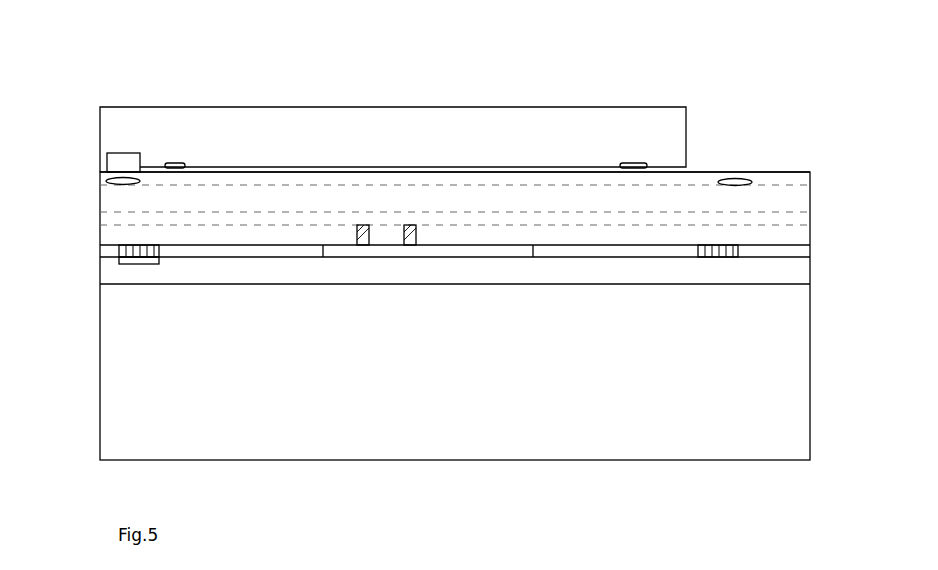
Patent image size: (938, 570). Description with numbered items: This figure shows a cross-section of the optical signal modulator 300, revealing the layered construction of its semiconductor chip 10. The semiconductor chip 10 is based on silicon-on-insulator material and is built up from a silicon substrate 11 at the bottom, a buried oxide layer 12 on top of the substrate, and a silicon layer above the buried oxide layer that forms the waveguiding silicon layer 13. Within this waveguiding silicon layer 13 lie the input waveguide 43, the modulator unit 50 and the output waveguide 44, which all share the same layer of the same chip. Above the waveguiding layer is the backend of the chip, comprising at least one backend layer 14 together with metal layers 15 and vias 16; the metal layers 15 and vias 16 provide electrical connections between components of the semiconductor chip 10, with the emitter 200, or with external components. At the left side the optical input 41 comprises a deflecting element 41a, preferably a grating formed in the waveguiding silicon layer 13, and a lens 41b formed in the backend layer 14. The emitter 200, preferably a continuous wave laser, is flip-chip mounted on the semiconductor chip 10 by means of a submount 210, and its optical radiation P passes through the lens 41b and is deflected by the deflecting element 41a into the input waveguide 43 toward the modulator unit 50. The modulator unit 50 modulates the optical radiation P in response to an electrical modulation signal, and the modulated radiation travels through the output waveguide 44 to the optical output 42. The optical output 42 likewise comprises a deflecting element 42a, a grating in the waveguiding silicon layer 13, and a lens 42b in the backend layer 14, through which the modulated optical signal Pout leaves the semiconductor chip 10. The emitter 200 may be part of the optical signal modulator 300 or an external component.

The optical signal modulator 300 is at (222, 87).
The submount 210 is at (442, 128).
The emitter 200 is at (112, 166).
The optical input 41 is at (100, 172).
The deflecting element 41a is at (157, 252).
The lens 41b is at (118, 187).
The optical output 42 is at (735, 178).
The deflecting element 42a is at (700, 247).
The lens 42b is at (748, 186).
The backend layer 14 is at (803, 180).
The metal layers 15 is at (803, 218).
The waveguiding silicon layer 13 is at (803, 250).
The buried oxide layer 12 is at (797, 270).
The semiconductor chip 10 is at (810, 310).
The silicon substrate 11 is at (792, 355).
The vias 16 is at (407, 226).
The input waveguide 43 is at (250, 255).
The output waveguide 44 is at (627, 252).
The modulator unit 50 is at (442, 252).
The optical radiation P is at (125, 187).
The modulated optical signal Pout is at (718, 253).